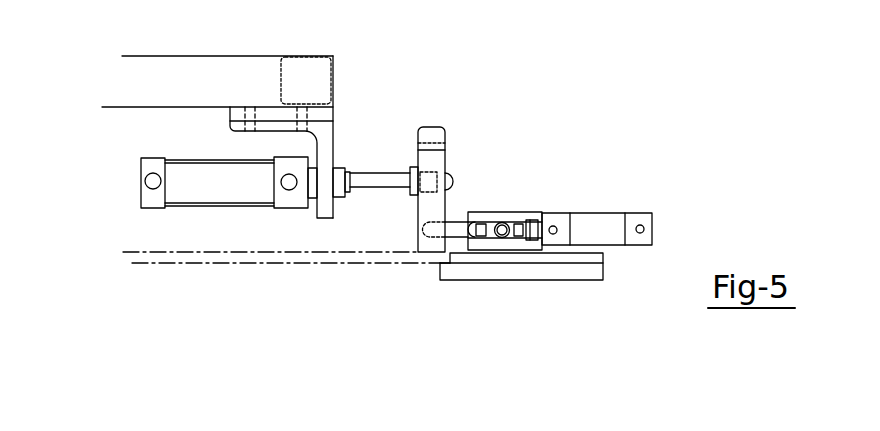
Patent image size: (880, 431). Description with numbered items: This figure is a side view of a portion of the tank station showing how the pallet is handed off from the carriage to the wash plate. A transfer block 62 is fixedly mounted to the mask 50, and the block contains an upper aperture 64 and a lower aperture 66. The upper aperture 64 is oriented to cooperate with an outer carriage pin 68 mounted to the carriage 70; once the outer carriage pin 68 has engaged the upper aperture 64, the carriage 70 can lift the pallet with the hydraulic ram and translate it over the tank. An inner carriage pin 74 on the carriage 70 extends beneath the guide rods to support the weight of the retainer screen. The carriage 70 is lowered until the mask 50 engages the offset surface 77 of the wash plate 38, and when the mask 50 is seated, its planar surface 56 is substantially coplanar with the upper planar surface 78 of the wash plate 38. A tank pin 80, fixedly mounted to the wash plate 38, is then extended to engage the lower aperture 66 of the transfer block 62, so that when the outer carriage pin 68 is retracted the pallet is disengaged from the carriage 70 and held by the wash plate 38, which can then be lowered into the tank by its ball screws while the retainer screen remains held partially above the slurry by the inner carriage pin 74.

The wash plate 38 is at (555, 257).
The mask 50 is at (253, 258).
The planar surface 56 is at (190, 252).
The transfer block 62 is at (432, 137).
The upper aperture 64 is at (448, 180).
The lower aperture 66 is at (423, 233).
The outer carriage pin 68 is at (372, 185).
The carriage 70 is at (208, 67).
The inner carriage pin 74 is at (306, 52).
The offset surface 77 is at (441, 258).
The upper planar surface 78 is at (600, 232).
The tank pin 80 is at (455, 228).